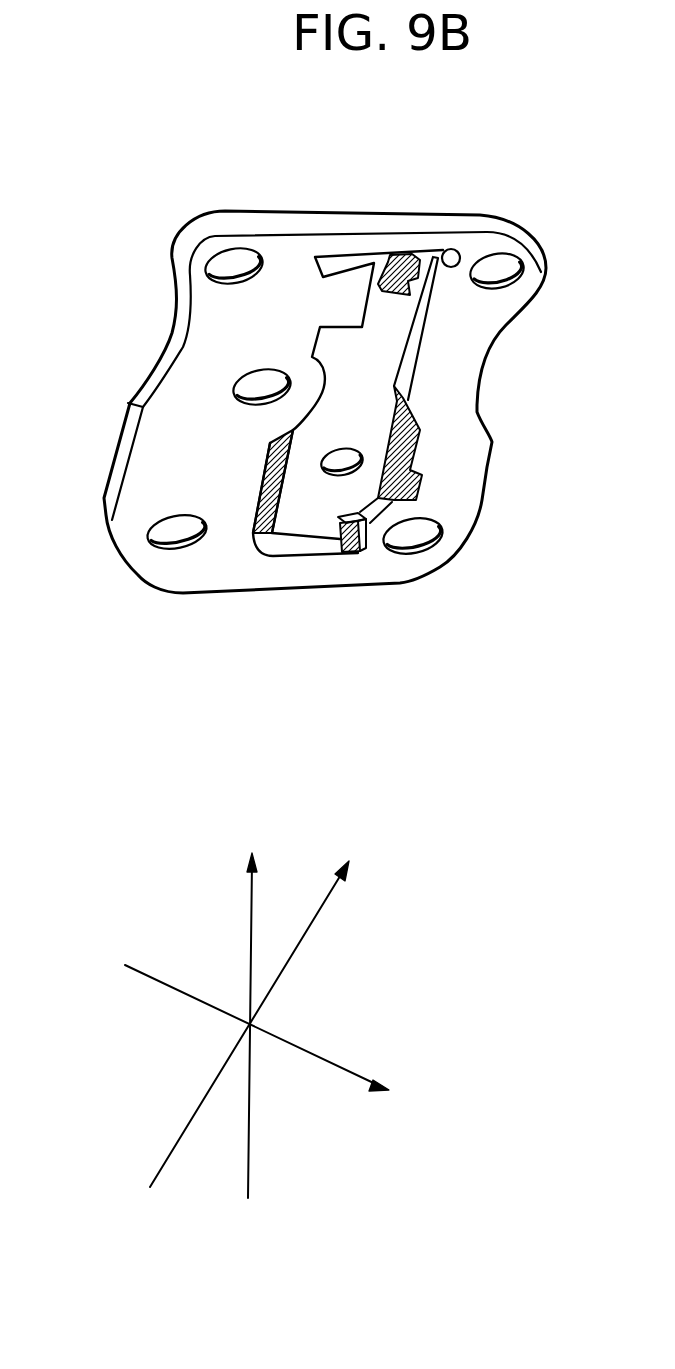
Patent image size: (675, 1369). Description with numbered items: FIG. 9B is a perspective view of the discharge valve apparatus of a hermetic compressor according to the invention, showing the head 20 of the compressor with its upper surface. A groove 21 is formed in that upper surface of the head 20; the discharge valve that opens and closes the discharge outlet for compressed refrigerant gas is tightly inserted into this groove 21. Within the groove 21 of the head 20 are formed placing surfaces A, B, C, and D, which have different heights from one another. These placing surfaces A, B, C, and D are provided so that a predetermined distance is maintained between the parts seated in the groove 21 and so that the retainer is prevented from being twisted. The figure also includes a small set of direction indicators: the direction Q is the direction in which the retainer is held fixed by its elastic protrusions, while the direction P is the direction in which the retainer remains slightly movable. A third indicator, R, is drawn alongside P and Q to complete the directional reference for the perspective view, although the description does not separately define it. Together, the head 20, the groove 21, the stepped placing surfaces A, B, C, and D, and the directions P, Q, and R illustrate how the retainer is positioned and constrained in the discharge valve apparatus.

The head 20 is at (143, 591).
The groove 21 is at (310, 523).
The placing surface A is at (263, 476).
The placing surface B is at (355, 557).
The placing surface C is at (430, 453).
The placing surface D is at (410, 263).
The direction P is at (249, 1010).
The direction Q is at (269, 1036).
The R axis direction R is at (260, 1013).